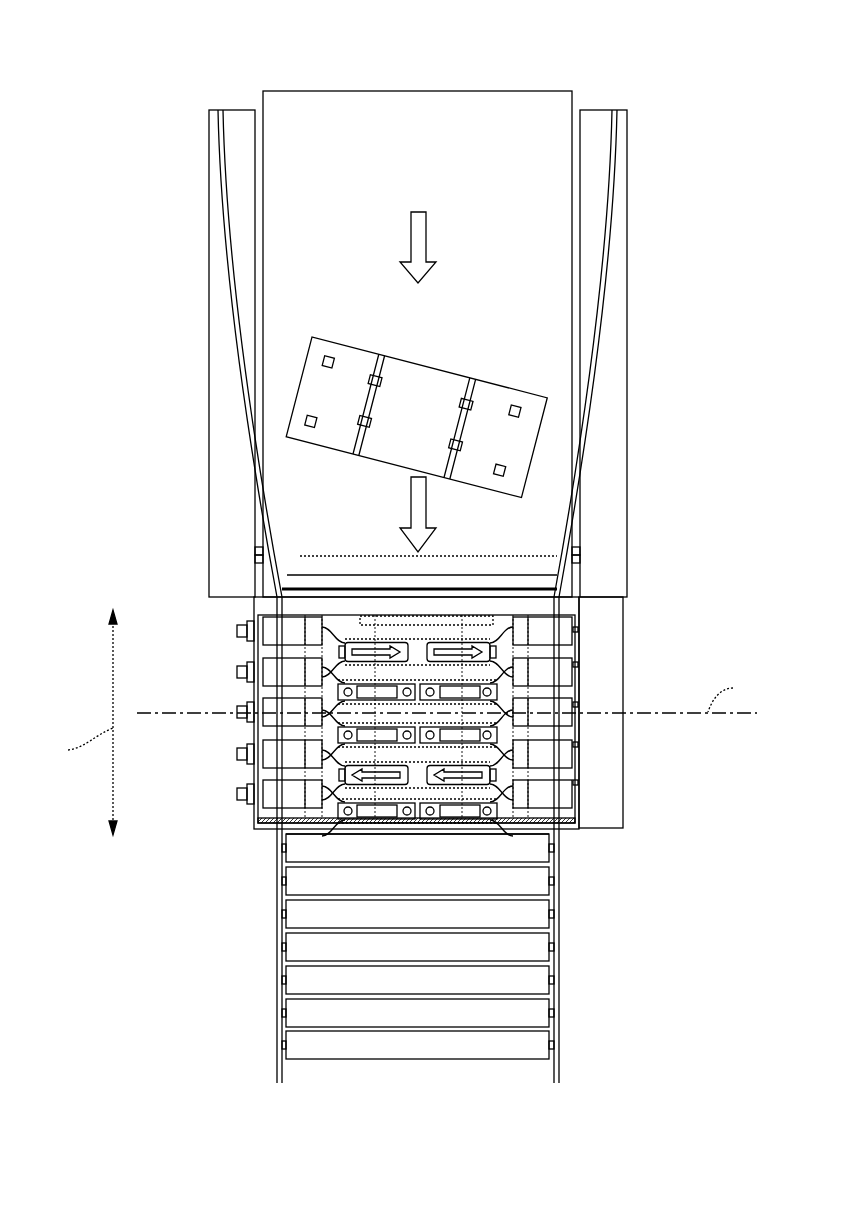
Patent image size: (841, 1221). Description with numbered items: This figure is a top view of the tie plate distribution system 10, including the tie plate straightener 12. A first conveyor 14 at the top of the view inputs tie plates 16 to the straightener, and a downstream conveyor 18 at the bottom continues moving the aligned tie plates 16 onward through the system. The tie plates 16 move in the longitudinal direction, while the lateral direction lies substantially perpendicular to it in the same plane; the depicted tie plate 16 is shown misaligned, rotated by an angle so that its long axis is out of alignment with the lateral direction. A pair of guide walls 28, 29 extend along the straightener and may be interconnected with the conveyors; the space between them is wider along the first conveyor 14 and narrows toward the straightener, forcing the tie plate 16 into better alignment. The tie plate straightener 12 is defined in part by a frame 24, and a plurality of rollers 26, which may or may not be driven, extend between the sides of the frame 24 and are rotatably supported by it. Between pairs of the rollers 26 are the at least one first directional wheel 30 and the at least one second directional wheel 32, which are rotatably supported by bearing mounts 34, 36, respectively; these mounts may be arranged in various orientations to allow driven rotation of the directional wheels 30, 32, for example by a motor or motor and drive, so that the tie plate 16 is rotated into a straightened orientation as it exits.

The tie plate distribution system 10 is at (694, 82).
The tie plate straightener 12 is at (656, 646).
The first conveyor 14 is at (523, 130).
The tie plate 16 is at (413, 377).
The conveyor 18 is at (343, 1080).
The frame 24 is at (608, 765).
The rollers 26 is at (240, 706).
The guide wall 28 is at (238, 322).
The guide wall 29 is at (585, 356).
The first directional wheel 30 is at (442, 640).
The second directional wheel 32 is at (282, 826).
The bearing mount 34 is at (235, 751).
The bearing mount 36 is at (575, 725).